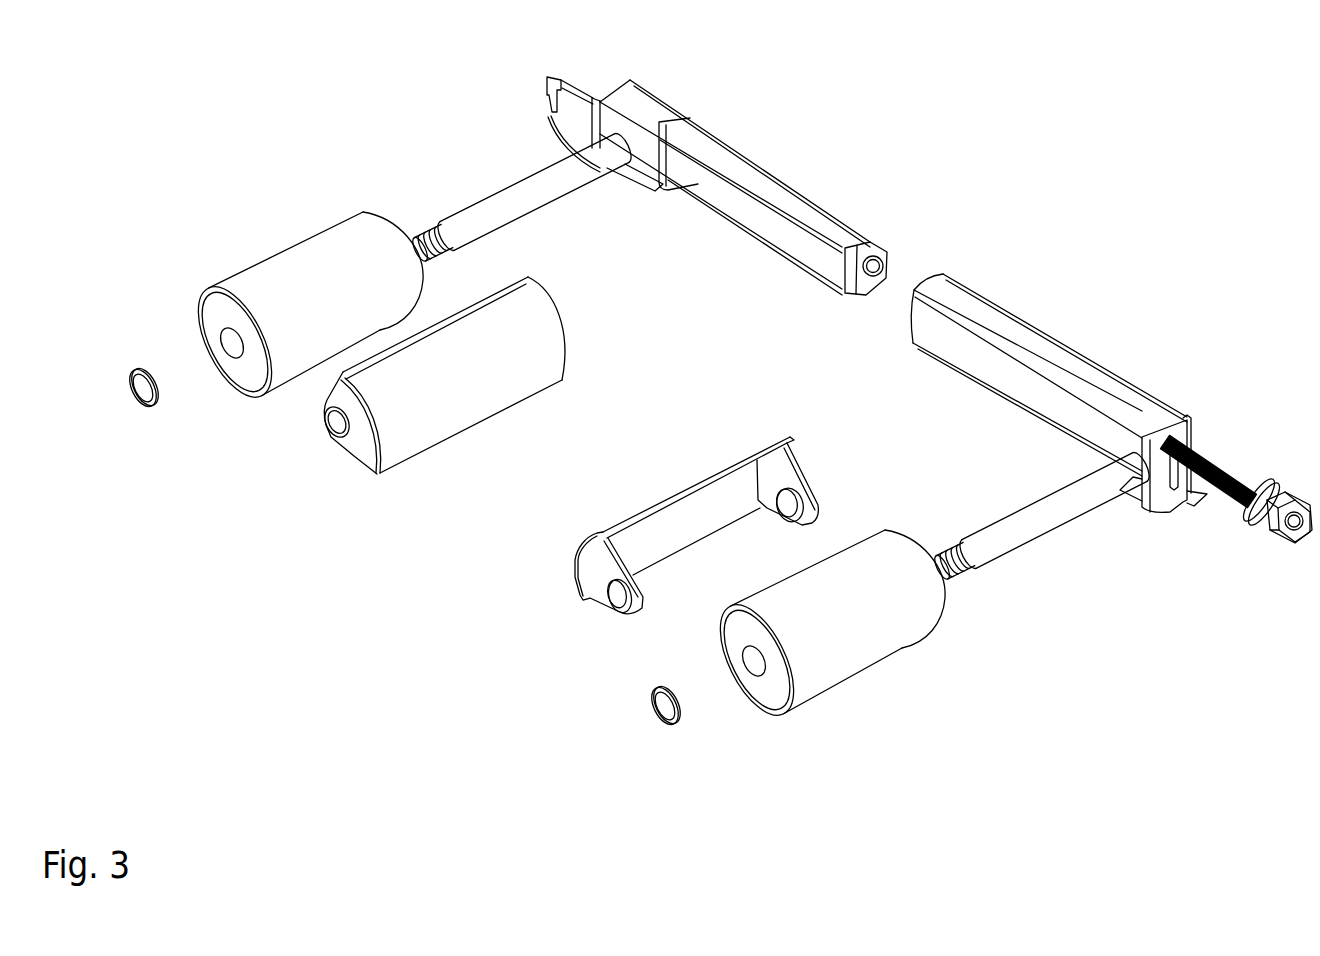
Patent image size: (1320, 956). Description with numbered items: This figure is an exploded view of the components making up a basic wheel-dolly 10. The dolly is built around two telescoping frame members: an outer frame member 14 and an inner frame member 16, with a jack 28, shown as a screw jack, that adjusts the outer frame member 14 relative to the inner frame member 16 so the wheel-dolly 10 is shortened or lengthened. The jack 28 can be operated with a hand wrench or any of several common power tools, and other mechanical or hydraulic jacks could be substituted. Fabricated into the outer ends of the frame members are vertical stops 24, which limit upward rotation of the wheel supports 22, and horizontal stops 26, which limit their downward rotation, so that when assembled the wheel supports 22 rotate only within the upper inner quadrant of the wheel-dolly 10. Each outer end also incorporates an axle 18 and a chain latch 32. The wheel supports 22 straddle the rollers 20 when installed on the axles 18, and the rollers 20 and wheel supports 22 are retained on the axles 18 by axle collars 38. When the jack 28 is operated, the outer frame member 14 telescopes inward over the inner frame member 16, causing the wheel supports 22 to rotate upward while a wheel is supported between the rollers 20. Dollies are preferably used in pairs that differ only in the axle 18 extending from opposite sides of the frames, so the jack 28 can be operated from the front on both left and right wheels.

The wheel-dolly 10 is at (949, 174).
The outer frame member 14 is at (1060, 343).
The inner frame member 16 is at (777, 177).
The axle 18 is at (518, 177).
The roller 20 is at (283, 250).
The wheel support 22 is at (470, 427).
The vertical stop 24 is at (597, 120).
The horizontal stop 26 is at (627, 178).
The jack 28 is at (1220, 463).
The chain latch 32 is at (553, 100).
The axle collar 38 is at (160, 407).